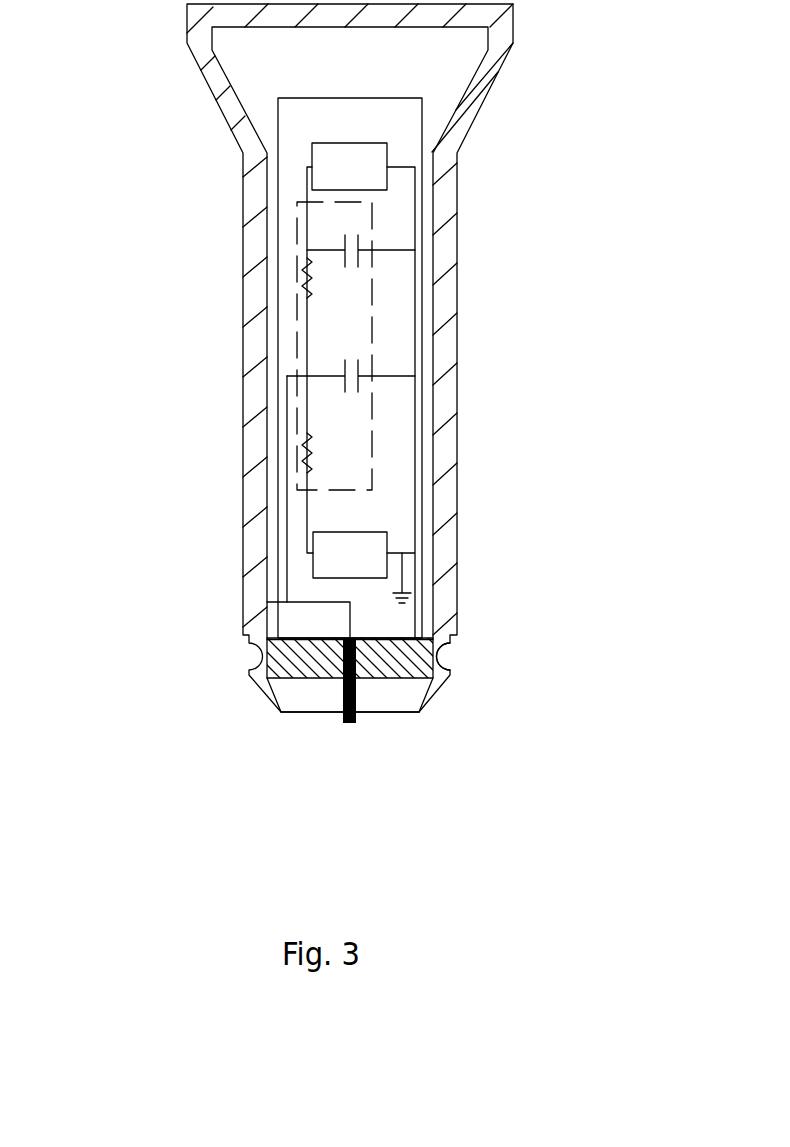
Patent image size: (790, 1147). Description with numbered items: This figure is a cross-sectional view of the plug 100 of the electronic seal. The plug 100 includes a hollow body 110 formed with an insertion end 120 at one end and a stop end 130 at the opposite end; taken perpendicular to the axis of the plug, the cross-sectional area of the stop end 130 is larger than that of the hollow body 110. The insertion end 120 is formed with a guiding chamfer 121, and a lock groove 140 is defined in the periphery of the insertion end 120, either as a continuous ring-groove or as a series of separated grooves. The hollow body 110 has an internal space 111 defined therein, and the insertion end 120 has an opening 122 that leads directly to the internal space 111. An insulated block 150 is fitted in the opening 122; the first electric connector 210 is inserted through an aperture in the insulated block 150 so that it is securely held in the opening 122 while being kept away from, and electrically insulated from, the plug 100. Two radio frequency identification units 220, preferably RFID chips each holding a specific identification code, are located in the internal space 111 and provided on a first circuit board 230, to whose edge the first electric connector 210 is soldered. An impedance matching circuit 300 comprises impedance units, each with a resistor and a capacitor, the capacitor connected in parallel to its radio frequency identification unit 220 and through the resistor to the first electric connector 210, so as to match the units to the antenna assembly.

The plug 100 is at (313, 397).
The hollow body 110 is at (227, 628).
The internal space 111 is at (353, 65).
The insertion end 120 is at (227, 395).
The guiding chamfer 121 is at (255, 705).
The opening 122 is at (405, 722).
The stop end 130 is at (172, 23).
The lock groove 140 is at (468, 657).
The insulated block 150 is at (428, 680).
The first electric connector 210 is at (347, 723).
The radio frequency identification unit 220 is at (370, 178).
The first circuit board 230 is at (422, 118).
The impedance matching circuit 300 is at (281, 327).